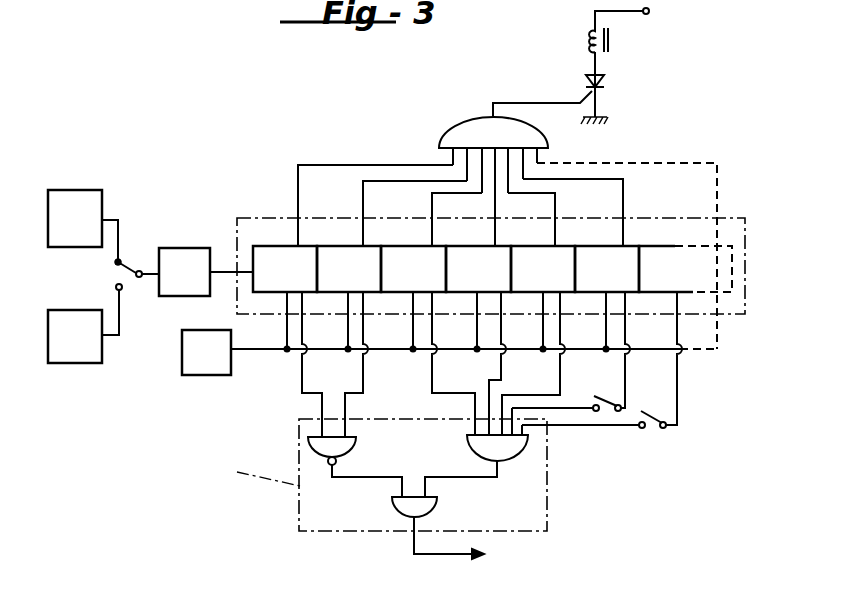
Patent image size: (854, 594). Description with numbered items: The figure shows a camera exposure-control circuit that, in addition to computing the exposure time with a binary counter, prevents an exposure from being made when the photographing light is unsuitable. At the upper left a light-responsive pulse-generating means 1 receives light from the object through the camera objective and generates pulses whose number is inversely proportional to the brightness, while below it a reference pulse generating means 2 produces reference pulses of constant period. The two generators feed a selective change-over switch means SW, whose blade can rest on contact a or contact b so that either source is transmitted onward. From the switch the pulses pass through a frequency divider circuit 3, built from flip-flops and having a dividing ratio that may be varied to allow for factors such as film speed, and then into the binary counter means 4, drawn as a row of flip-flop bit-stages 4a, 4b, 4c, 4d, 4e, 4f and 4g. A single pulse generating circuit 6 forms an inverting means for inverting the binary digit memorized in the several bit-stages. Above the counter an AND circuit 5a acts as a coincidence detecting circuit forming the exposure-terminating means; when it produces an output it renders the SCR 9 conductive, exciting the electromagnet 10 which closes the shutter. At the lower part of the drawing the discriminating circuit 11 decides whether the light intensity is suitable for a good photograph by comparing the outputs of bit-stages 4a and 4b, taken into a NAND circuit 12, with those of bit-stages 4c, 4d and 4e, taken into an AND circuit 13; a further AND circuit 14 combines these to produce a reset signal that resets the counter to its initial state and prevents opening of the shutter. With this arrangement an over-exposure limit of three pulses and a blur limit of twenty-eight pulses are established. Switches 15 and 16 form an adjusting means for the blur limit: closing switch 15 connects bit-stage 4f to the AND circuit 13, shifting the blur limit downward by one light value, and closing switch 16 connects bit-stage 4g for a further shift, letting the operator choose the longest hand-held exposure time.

The light-responsive pulse-generating means 1 is at (73, 202).
The reference pulse generating means 2 is at (81, 358).
The frequency divider circuit 3 is at (182, 256).
The selective change-over switch means SW is at (133, 266).
The switch contact a is at (115, 262).
The switch contact b is at (114, 289).
The binary counter means 4 is at (745, 222).
The bit-stage 4a is at (271, 254).
The bit-stage 4b is at (337, 253).
The bit-stage 4c is at (398, 255).
The bit-stage 4d is at (476, 253).
The bit-stage 4e is at (529, 254).
The bit-stage 4f is at (604, 252).
The bit-stage 4g is at (671, 253).
The AND circuit 5a is at (466, 140).
The single pulse generating circuit 6 is at (205, 375).
The SCR 9 is at (602, 81).
The electromagnet 10 is at (610, 42).
The discriminating circuit 11 is at (299, 514).
The NAND circuit 12 is at (348, 446).
The AND circuit 13 is at (504, 452).
The AND circuit 14 is at (430, 506).
The switch 15 is at (611, 399).
The switch 16 is at (648, 413).